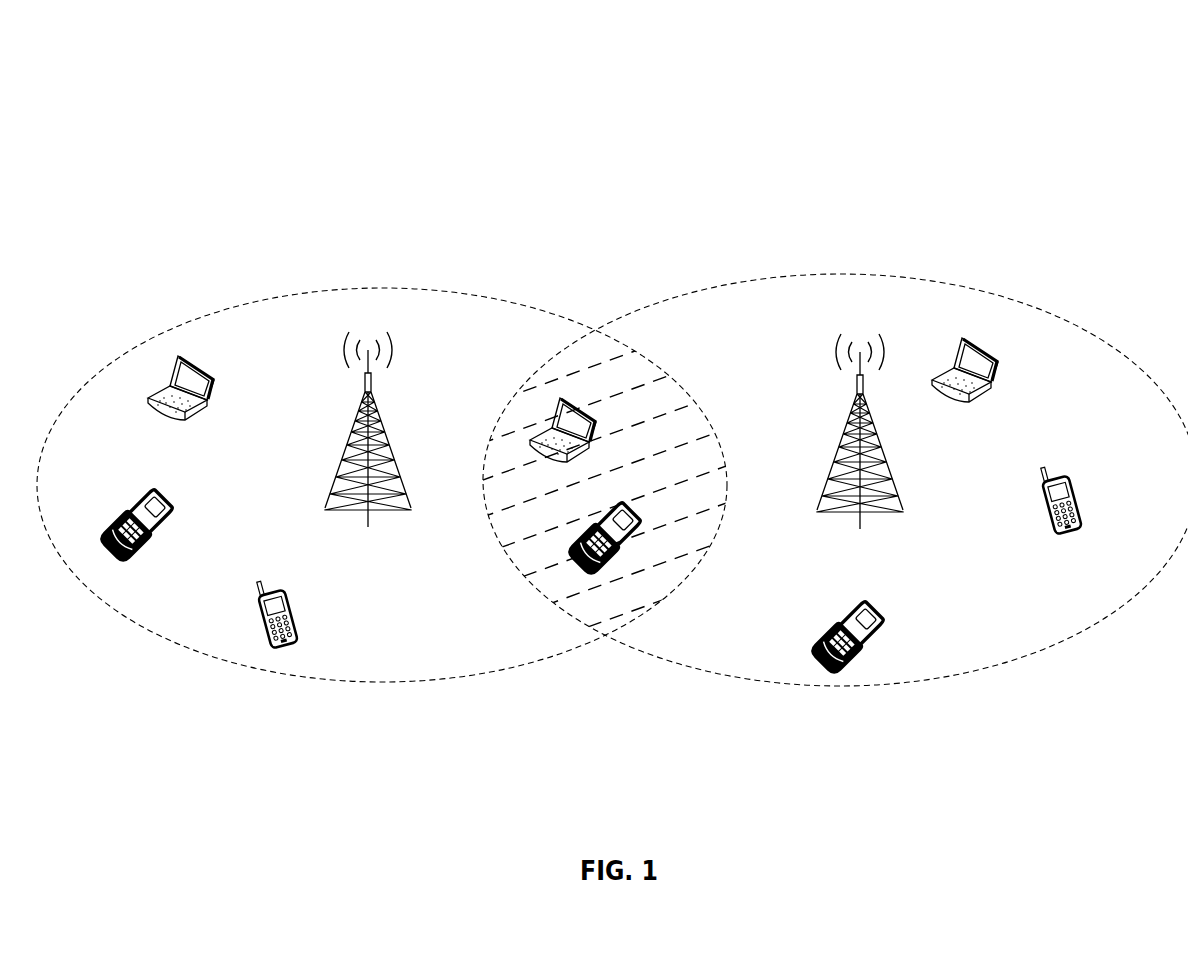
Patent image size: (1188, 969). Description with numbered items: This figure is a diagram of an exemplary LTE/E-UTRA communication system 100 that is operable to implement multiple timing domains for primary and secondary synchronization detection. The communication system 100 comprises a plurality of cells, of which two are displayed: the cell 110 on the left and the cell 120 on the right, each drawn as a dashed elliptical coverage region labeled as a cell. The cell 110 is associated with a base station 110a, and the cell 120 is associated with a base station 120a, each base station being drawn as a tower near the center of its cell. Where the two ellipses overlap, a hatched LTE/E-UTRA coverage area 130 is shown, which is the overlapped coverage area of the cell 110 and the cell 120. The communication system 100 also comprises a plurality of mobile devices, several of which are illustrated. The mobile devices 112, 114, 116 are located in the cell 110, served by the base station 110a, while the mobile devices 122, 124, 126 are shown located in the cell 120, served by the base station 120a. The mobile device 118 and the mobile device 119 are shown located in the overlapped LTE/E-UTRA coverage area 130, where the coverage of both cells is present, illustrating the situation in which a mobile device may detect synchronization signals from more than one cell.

The LTE/E-UTRA communication system 100 is at (298, 84).
The cell 110 is at (482, 298).
The base station 110a is at (398, 350).
The mobile device 112 is at (214, 381).
The mobile device 114 is at (165, 512).
The mobile device 116 is at (292, 628).
The mobile device 118 is at (635, 545).
The mobile device 119 is at (597, 446).
The cell 120 is at (912, 281).
The base station 120a is at (895, 367).
The mobile device 122 is at (1000, 362).
The mobile device 124 is at (1082, 510).
The mobile device 126 is at (880, 625).
The LTE/E-UTRA coverage area 130 is at (580, 338).